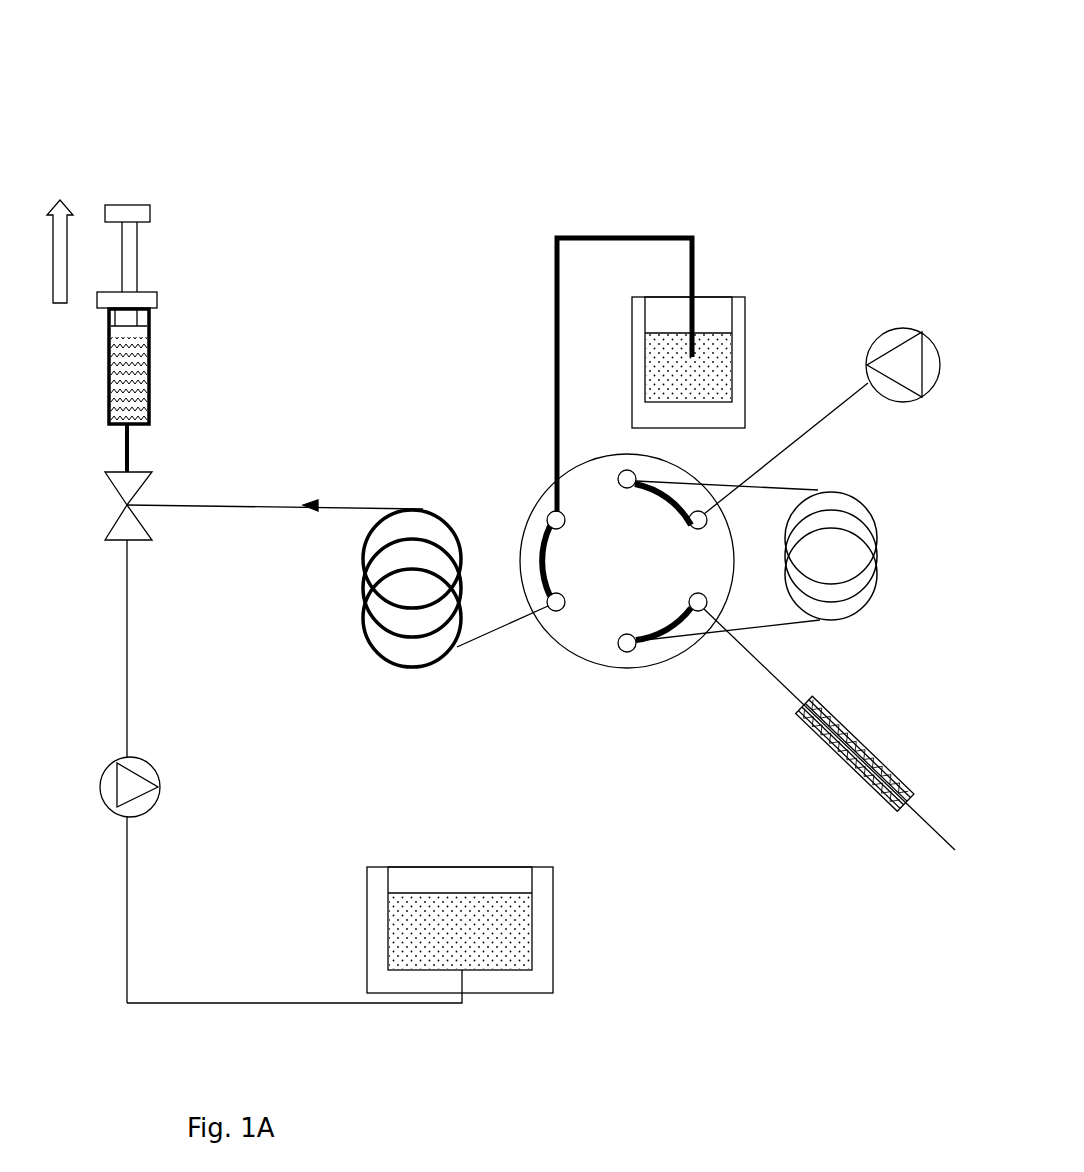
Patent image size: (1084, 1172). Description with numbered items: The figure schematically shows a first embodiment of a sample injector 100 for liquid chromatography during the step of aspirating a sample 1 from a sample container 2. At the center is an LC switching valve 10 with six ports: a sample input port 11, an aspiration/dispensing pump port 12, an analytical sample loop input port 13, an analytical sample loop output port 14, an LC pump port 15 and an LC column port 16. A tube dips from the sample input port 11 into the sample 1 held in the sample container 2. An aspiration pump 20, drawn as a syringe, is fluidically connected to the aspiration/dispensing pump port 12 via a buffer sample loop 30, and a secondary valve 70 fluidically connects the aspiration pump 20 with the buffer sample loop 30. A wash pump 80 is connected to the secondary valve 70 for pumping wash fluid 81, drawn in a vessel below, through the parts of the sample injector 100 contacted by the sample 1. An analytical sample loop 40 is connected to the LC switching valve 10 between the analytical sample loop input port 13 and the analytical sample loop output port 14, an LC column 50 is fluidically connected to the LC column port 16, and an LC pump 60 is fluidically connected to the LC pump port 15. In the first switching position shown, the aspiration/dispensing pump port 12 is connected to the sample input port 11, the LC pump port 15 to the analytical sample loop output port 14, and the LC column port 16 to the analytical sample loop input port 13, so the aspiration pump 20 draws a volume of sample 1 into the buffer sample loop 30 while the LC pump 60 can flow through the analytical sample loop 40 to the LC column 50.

The sample injector 100 is at (266, 104).
The sample 1 is at (705, 350).
The sample container 2 is at (744, 313).
The LC switching valve 10 is at (592, 668).
The sample input port 11 is at (551, 513).
The aspiration/dispensing pump port 12 is at (553, 612).
The analytical sample loop input port 13 is at (628, 652).
The analytical sample loop output port 14 is at (623, 471).
The LC pump port 15 is at (690, 525).
The LC column port 16 is at (690, 600).
The aspiration pump 20 is at (150, 349).
The buffer sample loop 30 is at (422, 510).
The analytical sample loop 40 is at (873, 513).
The LC column 50 is at (845, 755).
The LC pump 60 is at (903, 328).
The secondary valve 70 is at (150, 472).
The wash pump 80 is at (158, 770).
The wash fluid 81 is at (445, 910).